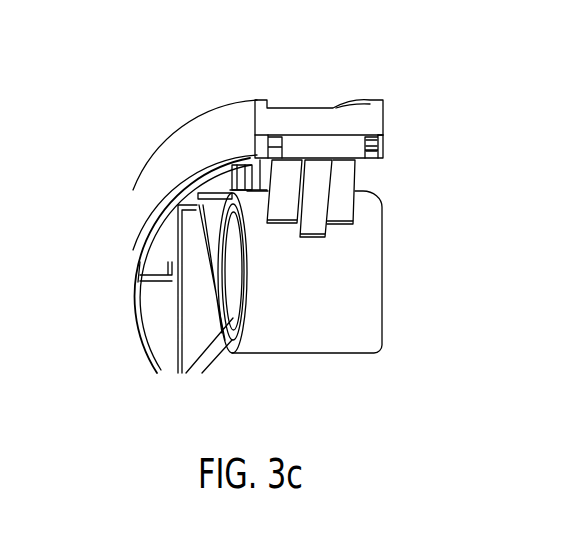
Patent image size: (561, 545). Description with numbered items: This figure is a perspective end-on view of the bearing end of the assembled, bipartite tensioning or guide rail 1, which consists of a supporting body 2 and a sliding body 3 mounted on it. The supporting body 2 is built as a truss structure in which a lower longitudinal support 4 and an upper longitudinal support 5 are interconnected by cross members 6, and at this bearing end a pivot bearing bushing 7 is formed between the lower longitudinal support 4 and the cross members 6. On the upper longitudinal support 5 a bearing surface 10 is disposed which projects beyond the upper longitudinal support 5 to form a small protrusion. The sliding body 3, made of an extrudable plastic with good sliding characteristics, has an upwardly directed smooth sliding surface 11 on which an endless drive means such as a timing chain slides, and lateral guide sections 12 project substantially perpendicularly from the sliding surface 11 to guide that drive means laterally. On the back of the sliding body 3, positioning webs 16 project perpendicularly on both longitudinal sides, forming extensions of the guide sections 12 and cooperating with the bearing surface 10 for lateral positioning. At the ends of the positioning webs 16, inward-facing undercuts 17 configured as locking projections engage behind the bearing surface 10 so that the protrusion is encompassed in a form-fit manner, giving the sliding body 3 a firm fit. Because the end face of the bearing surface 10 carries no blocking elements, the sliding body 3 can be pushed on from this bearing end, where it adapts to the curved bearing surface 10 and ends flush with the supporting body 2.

The tensioning or guide rail 1 is at (106, 119).
The supporting body 2 is at (146, 292).
The sliding body 3 is at (147, 200).
The lower longitudinal support 4 is at (188, 373).
The upper longitudinal support 5 is at (161, 263).
The cross members 6 is at (152, 312).
The pivot bearing bushing 7 is at (236, 286).
The bearing surface 10 is at (383, 140).
The sliding surface 11 is at (293, 108).
The guide sections 12 is at (263, 100).
The positioning webs 16 is at (378, 143).
The undercuts 17 is at (372, 158).